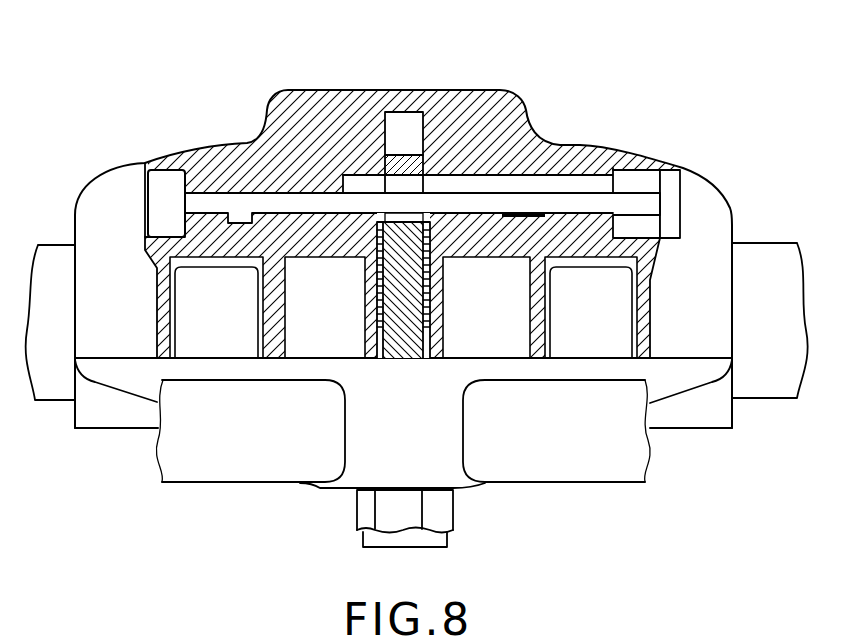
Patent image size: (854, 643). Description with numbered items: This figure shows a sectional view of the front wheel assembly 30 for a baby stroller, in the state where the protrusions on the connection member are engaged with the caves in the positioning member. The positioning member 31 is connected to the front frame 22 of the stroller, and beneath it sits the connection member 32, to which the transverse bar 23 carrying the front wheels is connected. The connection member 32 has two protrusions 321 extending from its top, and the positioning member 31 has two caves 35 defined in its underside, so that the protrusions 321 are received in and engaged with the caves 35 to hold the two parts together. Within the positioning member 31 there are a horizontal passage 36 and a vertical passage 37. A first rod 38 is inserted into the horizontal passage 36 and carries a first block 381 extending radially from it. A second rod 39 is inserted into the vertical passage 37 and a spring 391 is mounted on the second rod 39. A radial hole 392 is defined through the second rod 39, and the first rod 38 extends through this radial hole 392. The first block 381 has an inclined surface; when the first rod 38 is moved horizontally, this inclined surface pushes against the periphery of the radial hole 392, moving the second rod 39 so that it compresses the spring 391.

The front frame 22 is at (47, 265).
The transverse bar 23 is at (245, 463).
The front wheel assembly 30 is at (207, 93).
The positioning member 31 is at (458, 97).
The connection member 32 is at (365, 453).
The protrusions 321 is at (612, 307).
The caves 35 is at (582, 262).
The horizontal passage 36 is at (213, 192).
The vertical passage 37 is at (390, 185).
The first rod 38 is at (490, 200).
The first block 381 is at (422, 192).
The second rod 39 is at (405, 343).
The spring 391 is at (427, 286).
The radial hole 392 is at (408, 170).